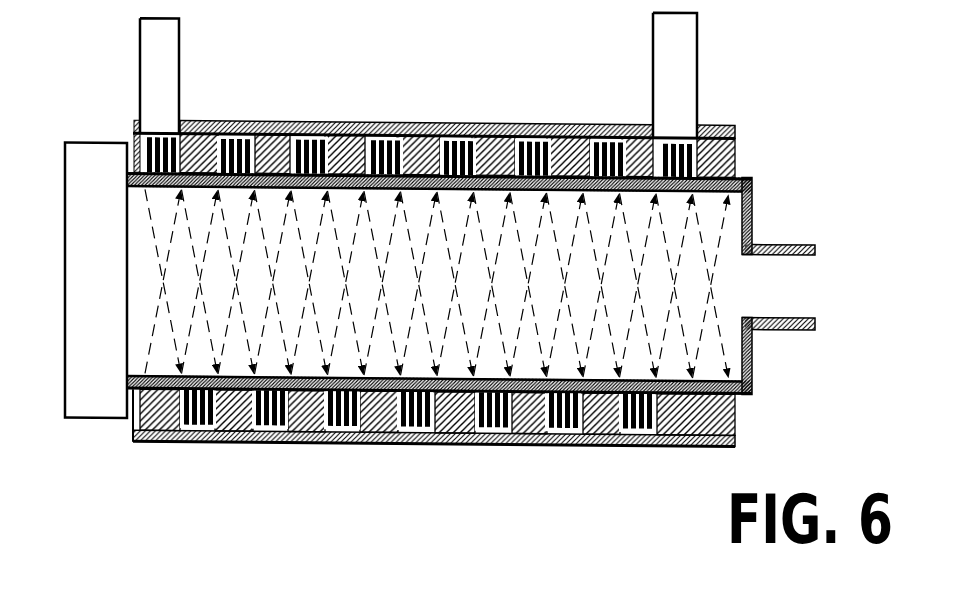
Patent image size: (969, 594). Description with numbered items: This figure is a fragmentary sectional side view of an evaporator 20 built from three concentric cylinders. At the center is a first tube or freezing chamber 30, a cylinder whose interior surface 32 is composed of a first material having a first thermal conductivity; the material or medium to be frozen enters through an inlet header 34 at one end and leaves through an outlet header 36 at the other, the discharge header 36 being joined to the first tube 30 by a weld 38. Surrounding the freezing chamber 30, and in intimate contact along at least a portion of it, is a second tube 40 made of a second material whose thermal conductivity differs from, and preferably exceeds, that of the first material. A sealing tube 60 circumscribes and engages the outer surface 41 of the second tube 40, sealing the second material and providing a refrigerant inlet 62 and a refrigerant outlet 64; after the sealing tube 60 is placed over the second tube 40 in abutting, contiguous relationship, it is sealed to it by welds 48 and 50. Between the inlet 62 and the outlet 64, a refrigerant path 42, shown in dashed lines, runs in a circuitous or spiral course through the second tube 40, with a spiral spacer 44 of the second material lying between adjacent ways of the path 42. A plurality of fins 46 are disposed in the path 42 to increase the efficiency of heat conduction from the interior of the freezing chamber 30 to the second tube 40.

The evaporator 20 is at (371, 114).
The first tube or freezing chamber 30 is at (735, 398).
The interior surface 32 is at (718, 380).
The inlet header 34 is at (102, 158).
The outlet header 36 is at (752, 233).
The weld 38 is at (750, 182).
The second tube 40 is at (718, 415).
The outer surface 41 is at (318, 432).
The refrigerant path 42 is at (220, 270).
The spiral spacer 44 is at (530, 418).
The fins 46 is at (231, 137).
The weld 48 is at (735, 132).
The weld 50 is at (137, 131).
The sealing tube 60 is at (410, 129).
The refrigerant inlet 62 is at (173, 66).
The refrigerant outlet 64 is at (687, 65).